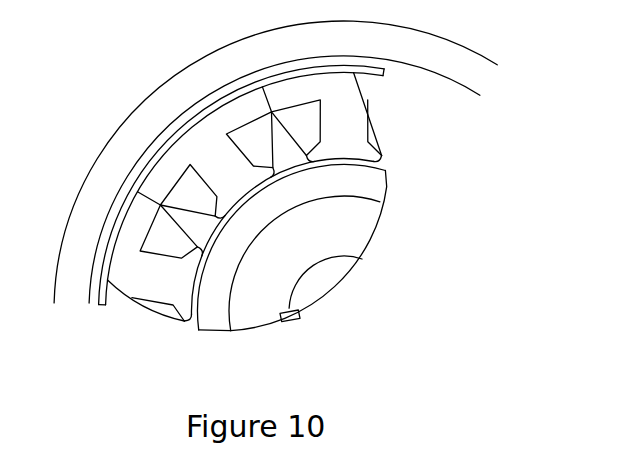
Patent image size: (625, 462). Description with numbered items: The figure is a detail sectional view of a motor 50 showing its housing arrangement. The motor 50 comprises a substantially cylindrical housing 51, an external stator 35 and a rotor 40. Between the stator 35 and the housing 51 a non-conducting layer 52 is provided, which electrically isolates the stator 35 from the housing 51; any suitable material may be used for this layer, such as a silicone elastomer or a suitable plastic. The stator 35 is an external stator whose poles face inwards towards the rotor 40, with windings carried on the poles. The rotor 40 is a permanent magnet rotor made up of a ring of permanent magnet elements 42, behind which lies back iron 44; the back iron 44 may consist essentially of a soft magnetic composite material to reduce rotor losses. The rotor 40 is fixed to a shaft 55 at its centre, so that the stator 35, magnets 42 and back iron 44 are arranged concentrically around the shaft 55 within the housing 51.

The stator 35 is at (131, 335).
The rotor 40 is at (330, 269).
The permanent magnet elements 42 is at (388, 186).
The back iron 44 is at (258, 320).
The motor 50 is at (126, 62).
The housing 51 is at (408, 42).
The non-conducting layer 52 is at (386, 73).
The shaft 55 is at (325, 283).